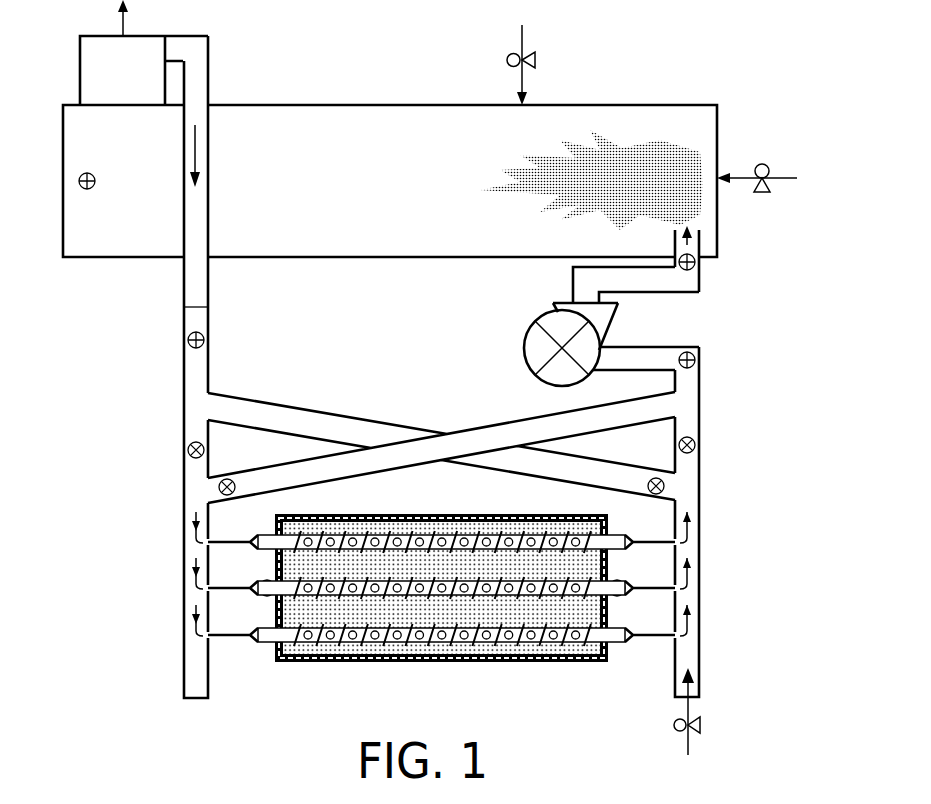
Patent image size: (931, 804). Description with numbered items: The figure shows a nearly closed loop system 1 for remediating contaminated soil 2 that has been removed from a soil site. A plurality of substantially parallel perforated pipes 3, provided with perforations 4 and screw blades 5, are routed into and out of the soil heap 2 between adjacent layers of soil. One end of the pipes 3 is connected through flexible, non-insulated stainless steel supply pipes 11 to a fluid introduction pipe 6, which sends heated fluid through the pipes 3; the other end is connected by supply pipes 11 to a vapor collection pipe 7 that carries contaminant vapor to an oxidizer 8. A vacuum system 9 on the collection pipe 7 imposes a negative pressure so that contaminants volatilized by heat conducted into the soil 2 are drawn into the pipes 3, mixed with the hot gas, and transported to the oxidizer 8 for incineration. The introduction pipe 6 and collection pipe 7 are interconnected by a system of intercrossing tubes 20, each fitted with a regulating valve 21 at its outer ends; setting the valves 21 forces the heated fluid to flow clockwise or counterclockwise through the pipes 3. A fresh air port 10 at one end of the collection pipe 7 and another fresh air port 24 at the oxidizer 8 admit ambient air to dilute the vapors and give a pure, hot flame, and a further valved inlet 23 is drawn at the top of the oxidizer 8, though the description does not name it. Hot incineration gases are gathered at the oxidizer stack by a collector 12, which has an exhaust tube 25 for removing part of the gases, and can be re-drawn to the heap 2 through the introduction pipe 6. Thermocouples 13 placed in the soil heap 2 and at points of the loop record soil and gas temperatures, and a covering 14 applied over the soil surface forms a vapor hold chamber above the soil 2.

The nearly closed loop system 1 is at (792, 60).
The contaminated soil 2 is at (441, 617).
The perforated pipes 3 is at (478, 662).
The perforations 4 is at (393, 662).
The screw blades 5 is at (357, 662).
The fluid introduction pipe 6 is at (184, 668).
The vapor collection pipe 7 is at (701, 648).
The oxidizer 8 is at (352, 128).
The vacuum system 9 is at (535, 349).
The fresh air port 10 is at (688, 745).
The supply pipes 11 is at (230, 641).
The collector 12 is at (90, 68).
The thermocouples 13 is at (87, 171).
The covering 14 is at (518, 662).
The tube 20 is at (293, 420).
The regulating valve 21 is at (188, 450).
The fuel valve 23 is at (520, 38).
The fresh air port 24 is at (785, 175).
The exhaust tube 25 is at (118, 23).